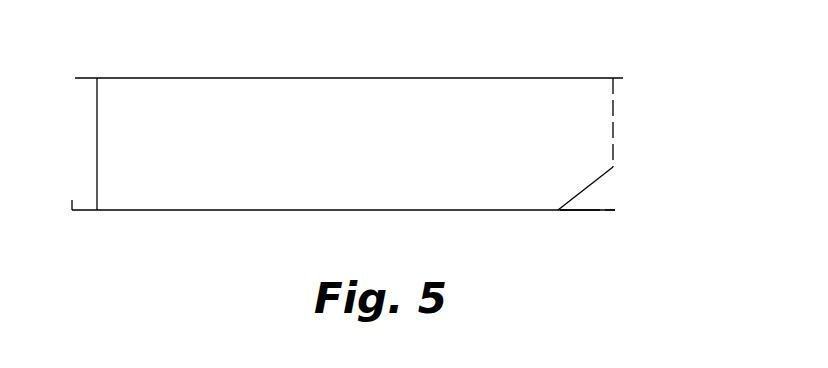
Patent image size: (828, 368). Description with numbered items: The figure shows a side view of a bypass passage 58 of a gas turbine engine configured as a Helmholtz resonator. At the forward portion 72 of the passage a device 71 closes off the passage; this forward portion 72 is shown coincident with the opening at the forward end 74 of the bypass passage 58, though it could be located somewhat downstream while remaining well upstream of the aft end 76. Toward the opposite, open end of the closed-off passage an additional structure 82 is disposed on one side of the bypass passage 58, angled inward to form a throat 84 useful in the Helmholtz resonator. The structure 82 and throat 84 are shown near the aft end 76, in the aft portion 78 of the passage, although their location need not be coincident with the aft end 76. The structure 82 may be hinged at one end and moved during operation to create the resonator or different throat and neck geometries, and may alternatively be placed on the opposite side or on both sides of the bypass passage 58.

The bypass passage 58 is at (412, 78).
The device 71 is at (97, 175).
The forward portion 72 is at (110, 231).
The forward end 74 is at (72, 211).
The aft end 76 is at (615, 212).
The aft portion 78 is at (595, 243).
The structure 82 is at (580, 190).
The throat 84 is at (614, 112).